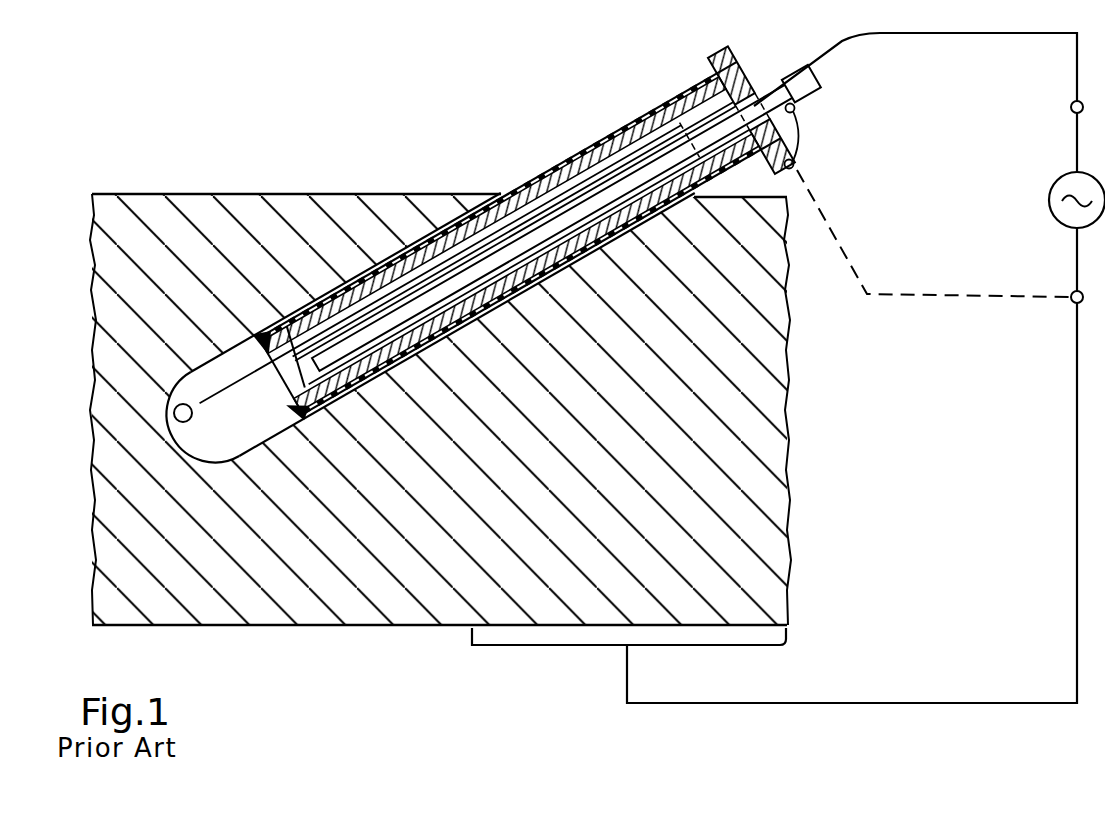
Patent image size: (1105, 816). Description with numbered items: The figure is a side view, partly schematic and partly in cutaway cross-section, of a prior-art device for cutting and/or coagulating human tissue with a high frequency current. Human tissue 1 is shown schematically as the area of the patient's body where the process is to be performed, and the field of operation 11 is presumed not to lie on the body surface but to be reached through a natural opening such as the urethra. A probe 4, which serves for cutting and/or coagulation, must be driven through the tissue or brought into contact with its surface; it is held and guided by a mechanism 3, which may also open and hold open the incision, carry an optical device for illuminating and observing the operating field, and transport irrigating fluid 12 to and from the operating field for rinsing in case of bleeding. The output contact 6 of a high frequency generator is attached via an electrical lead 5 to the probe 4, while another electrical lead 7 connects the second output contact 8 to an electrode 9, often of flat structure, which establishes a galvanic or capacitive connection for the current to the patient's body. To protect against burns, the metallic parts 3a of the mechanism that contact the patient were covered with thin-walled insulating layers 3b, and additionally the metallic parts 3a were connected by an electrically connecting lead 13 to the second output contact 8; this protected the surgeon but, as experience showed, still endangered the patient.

The human tissue 1 is at (442, 338).
The mechanism 3 is at (557, 222).
The metallic parts 3a is at (812, 136).
The insulating layers 3b is at (518, 244).
The probe 4 is at (194, 426).
The electrical lead 5 is at (915, 69).
The output contact 6 is at (1088, 109).
The electrical lead 7 is at (852, 505).
The second output contact 8 is at (1088, 299).
The electrode 9 is at (629, 657).
The field of operation 11 is at (168, 409).
The fluid 12 is at (248, 430).
The electrically connecting lead 13 is at (934, 234).